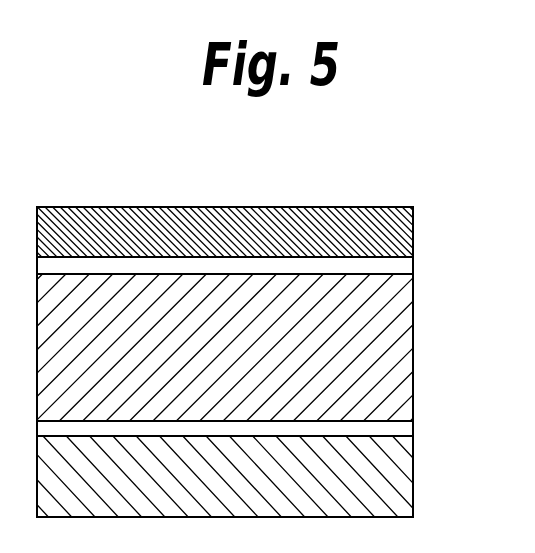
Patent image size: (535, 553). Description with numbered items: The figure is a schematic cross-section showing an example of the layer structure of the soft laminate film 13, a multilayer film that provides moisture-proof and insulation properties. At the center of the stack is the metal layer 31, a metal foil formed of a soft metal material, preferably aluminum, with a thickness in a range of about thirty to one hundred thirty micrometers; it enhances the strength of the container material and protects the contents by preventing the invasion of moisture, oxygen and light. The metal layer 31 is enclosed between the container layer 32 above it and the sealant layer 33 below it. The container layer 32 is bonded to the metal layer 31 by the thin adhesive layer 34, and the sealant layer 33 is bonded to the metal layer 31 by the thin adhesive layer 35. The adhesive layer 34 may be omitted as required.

The soft laminate film 13 is at (240, 160).
The metal layer 31 is at (413, 346).
The container layer 32 is at (413, 232).
The sealant layer 33 is at (413, 476).
The adhesive layer 34 is at (413, 265).
The adhesive layer 35 is at (413, 428).